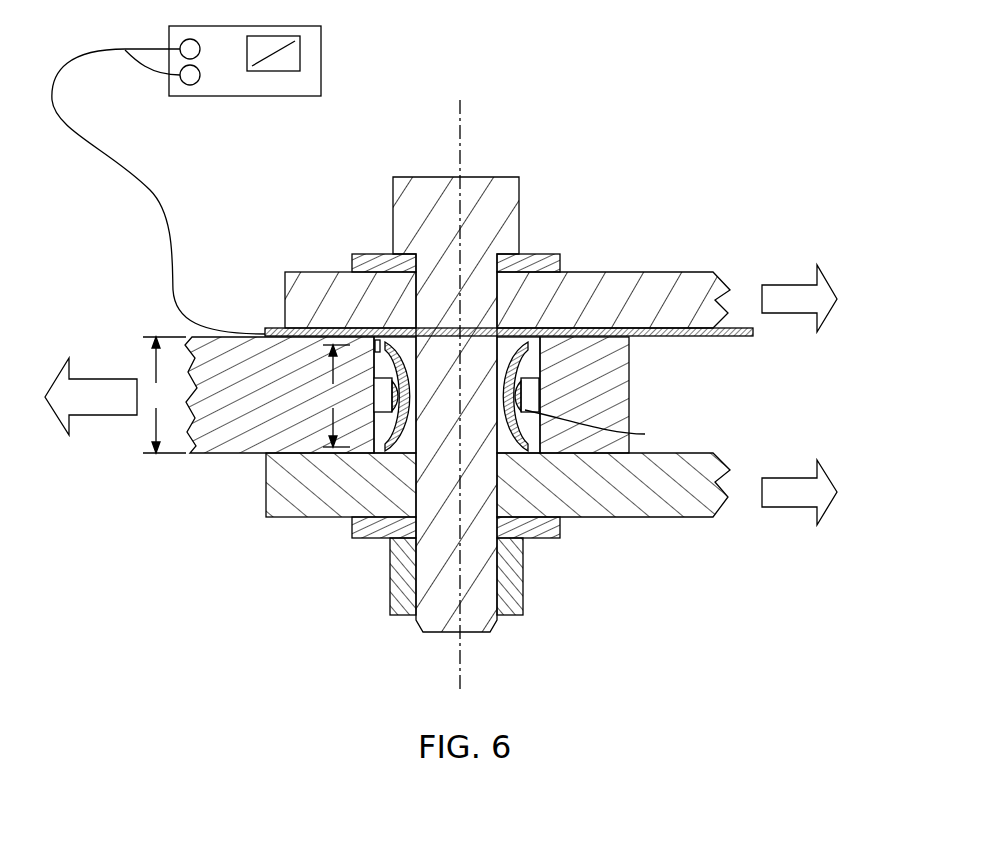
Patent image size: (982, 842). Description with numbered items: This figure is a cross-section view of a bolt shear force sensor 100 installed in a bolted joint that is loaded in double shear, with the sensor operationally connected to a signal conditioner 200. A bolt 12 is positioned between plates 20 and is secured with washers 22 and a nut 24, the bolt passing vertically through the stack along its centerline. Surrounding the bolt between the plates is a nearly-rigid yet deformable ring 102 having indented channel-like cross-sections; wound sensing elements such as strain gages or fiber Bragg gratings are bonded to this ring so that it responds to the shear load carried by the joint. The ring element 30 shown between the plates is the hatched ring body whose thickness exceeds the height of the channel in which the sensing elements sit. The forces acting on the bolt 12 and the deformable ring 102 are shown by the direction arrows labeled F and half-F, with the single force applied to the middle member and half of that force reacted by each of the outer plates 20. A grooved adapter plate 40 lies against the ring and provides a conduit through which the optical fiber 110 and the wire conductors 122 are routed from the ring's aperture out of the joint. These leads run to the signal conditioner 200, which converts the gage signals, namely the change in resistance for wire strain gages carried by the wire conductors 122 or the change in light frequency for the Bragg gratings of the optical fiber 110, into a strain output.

The bolt shear force sensor 100 is at (585, 147).
The bolt 12 is at (488, 632).
The plates 20 is at (700, 272).
The washers 22 is at (545, 254).
The nut 24 is at (523, 590).
The ring 30 is at (253, 455).
The grooved adapter plate 40 is at (278, 327).
The deformable ring 102 is at (390, 450).
The optical fiber 110 is at (156, 191).
The wire conductors 122 is at (157, 200).
The signal conditioner 200 is at (321, 52).